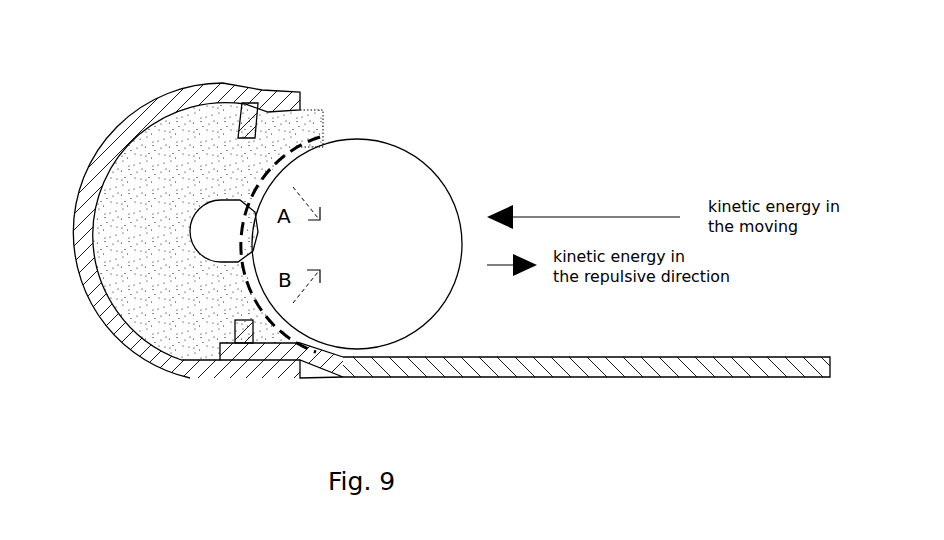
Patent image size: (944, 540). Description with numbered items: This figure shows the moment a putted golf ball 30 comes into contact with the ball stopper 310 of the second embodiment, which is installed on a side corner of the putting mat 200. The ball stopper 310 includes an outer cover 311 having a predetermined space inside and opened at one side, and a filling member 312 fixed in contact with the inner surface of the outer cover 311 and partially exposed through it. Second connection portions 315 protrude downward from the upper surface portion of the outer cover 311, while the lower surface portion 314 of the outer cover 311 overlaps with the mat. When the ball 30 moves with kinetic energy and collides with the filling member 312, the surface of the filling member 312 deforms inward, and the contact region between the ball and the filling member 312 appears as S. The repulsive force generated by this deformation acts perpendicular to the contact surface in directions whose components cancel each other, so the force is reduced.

The ball stopper 310 is at (117, 88).
The outer cover 311 is at (214, 92).
The filling member 312 is at (308, 122).
The lower surface portion 314 is at (242, 333).
The second connection portions 315 is at (248, 112).
The contact region S is at (283, 170).
The ball 30 is at (413, 180).
The putting mat 200 is at (662, 367).